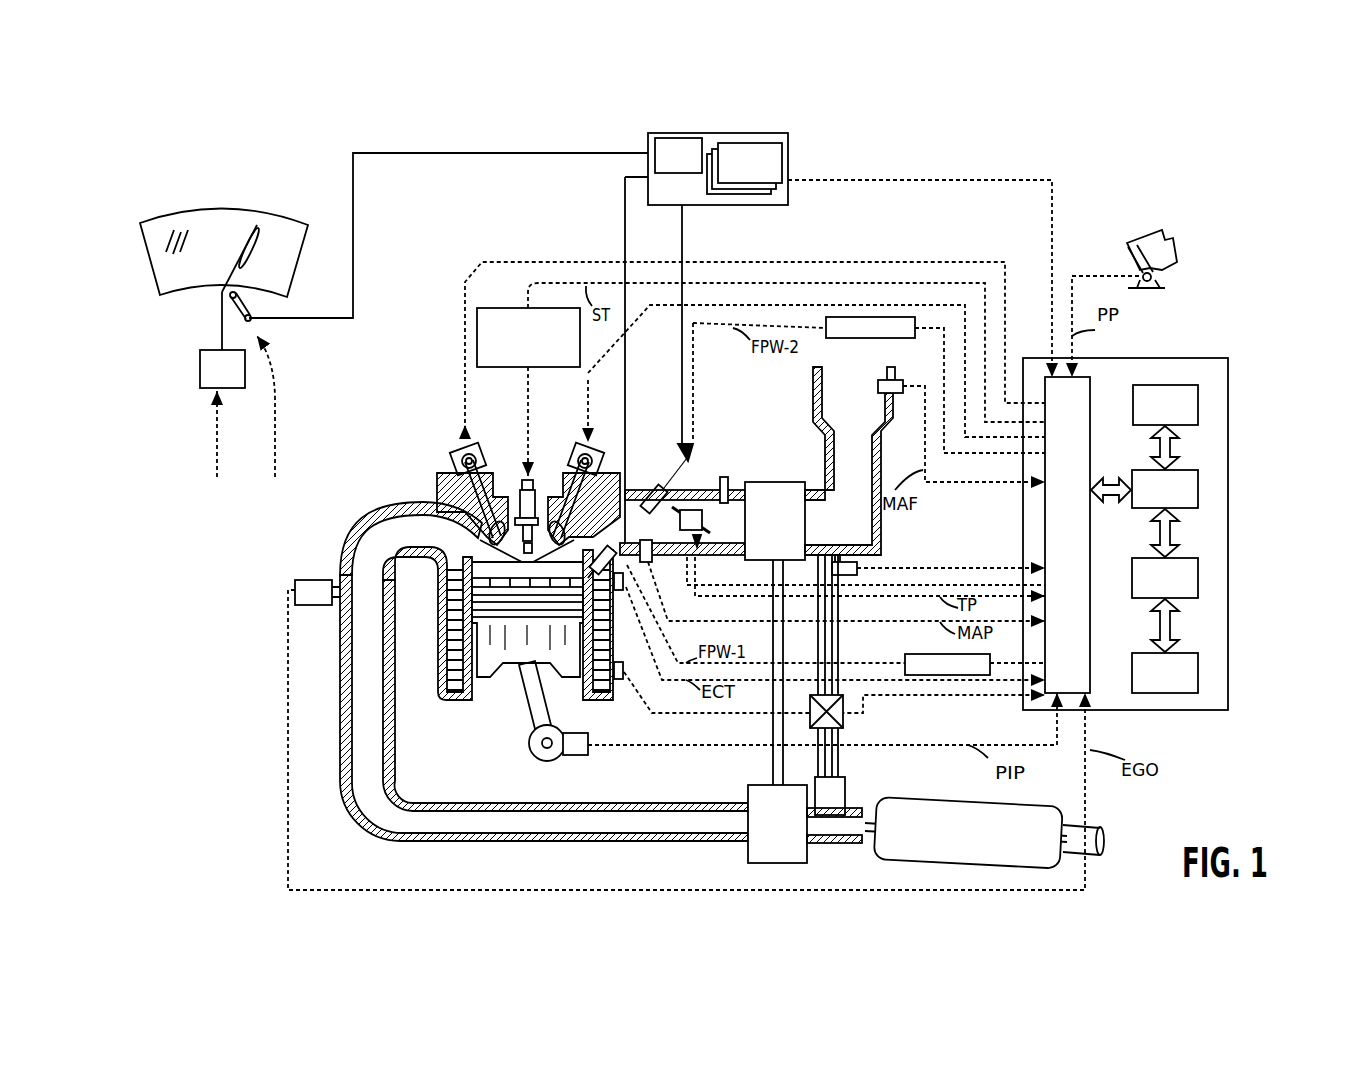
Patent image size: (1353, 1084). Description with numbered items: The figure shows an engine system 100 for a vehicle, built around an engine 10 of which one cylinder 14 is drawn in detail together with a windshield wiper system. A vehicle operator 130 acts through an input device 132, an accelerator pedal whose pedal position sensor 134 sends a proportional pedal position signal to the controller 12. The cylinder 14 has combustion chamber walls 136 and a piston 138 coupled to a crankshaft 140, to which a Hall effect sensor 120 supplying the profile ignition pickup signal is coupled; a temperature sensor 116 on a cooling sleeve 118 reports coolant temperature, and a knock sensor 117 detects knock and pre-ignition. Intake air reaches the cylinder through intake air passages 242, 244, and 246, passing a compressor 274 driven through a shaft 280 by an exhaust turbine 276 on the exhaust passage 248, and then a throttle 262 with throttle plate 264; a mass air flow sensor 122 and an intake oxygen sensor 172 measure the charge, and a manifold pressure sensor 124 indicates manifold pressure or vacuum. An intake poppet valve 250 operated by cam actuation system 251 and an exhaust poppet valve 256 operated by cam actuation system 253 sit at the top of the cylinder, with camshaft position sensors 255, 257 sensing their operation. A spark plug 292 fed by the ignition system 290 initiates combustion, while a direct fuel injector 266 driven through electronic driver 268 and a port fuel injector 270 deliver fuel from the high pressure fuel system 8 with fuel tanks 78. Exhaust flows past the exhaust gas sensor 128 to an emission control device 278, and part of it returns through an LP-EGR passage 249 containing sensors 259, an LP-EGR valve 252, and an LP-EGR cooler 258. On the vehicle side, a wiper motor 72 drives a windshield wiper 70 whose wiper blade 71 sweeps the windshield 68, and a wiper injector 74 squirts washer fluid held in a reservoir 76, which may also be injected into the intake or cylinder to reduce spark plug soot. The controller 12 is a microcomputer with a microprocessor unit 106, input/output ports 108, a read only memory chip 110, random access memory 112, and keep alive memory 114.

The engine system 100 is at (176, 170).
The windshield 68 is at (202, 213).
The windshield wiper 70 is at (244, 230).
The wiper blade 71 is at (258, 247).
The wiper injector 74 is at (250, 305).
The wiper motor 72 is at (255, 394).
The engine 10 is at (428, 372).
The high pressure fuel system 8 is at (721, 338).
The reservoir 76 is at (687, 171).
The fuel tanks 78 is at (759, 176).
The throttle 262 is at (690, 505).
The ignition system 290 is at (482, 308).
The electronic driver 268 is at (908, 496).
The exhaust poppet valve 256 is at (445, 500).
The intake poppet valve 250 is at (543, 507).
The camshaft position sensor 257 is at (455, 460).
The cam actuation system 253 is at (472, 448).
The camshaft position sensor 255 is at (602, 462).
The cam actuation system 251 is at (592, 450).
The spark plug 292 is at (522, 482).
The exhaust passage 248 is at (427, 539).
The exhaust gas sensor 128 is at (295, 585).
The cylinder 14 is at (498, 646).
The combustion chamber walls 136 is at (472, 697).
The cooling sleeve 118 is at (586, 688).
The temperature sensor 116 is at (623, 591).
The knock sensor 117 is at (624, 681).
The piston 138 is at (505, 655).
The crankshaft 140 is at (538, 758).
The Hall effect sensor 120 is at (580, 757).
The direct fuel injector 266 is at (598, 550).
The port fuel injector 270 is at (656, 490).
The intake air passage 244 is at (739, 524).
The intake oxygen sensor 172 is at (727, 477).
The intake air passage 246 is at (657, 538).
The throttle plate 264 is at (660, 562).
The manifold pressure sensor 124 is at (668, 565).
The compressor 274 is at (775, 482).
The intake air passage 242 is at (867, 411).
The mass air flow sensor 122 is at (897, 380).
The sensors 259 is at (833, 560).
The shaft 280 is at (772, 762).
The LP-EGR passage 249 is at (839, 766).
The LP-EGR valve 252 is at (845, 717).
The LP-EGR cooler 258 is at (847, 790).
The exhaust turbine 276 is at (748, 858).
The emission control device 278 is at (1020, 800).
The vehicle operator 130 is at (1180, 244).
The input device 132 is at (1128, 258).
The pedal position sensor 134 is at (1160, 278).
The controller 12 is at (1162, 521).
The input/output ports 108 is at (1092, 388).
The read only memory chip 110 is at (1200, 401).
The microprocessor unit 106 is at (1200, 482).
The random access memory 112 is at (1199, 578).
The keep alive memory 114 is at (1199, 669).